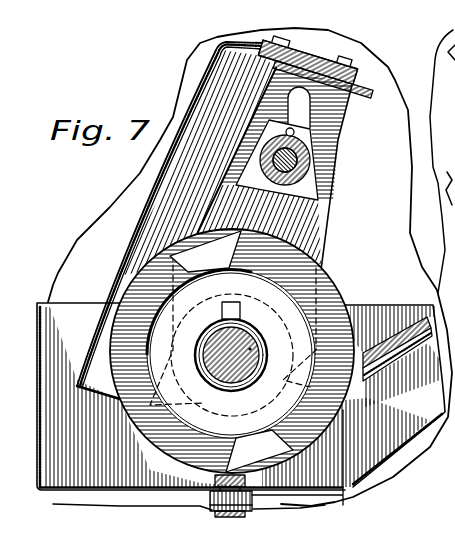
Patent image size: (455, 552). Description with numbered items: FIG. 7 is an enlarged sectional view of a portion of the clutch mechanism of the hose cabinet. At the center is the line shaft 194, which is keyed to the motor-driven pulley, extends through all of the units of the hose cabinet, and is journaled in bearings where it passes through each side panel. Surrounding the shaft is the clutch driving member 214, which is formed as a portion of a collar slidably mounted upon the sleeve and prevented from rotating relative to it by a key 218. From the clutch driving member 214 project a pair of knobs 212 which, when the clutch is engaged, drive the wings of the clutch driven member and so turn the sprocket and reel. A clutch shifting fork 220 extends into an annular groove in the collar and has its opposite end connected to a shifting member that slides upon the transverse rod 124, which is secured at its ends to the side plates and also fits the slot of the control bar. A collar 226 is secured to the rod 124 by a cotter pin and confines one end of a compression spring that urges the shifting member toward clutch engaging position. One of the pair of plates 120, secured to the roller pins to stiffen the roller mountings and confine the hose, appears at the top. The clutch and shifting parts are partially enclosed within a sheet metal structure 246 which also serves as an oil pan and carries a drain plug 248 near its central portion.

The plate 120 is at (320, 88).
The rod 124 is at (312, 166).
The line shaft 194 is at (250, 349).
The knobs 212 is at (224, 259).
The clutch driving member 214 is at (328, 293).
The key 218 is at (227, 310).
The clutch shifting fork 220 is at (232, 220).
The collar 226 is at (232, 176).
The sheet metal structure 246 is at (346, 504).
The drain plug 248 is at (248, 516).